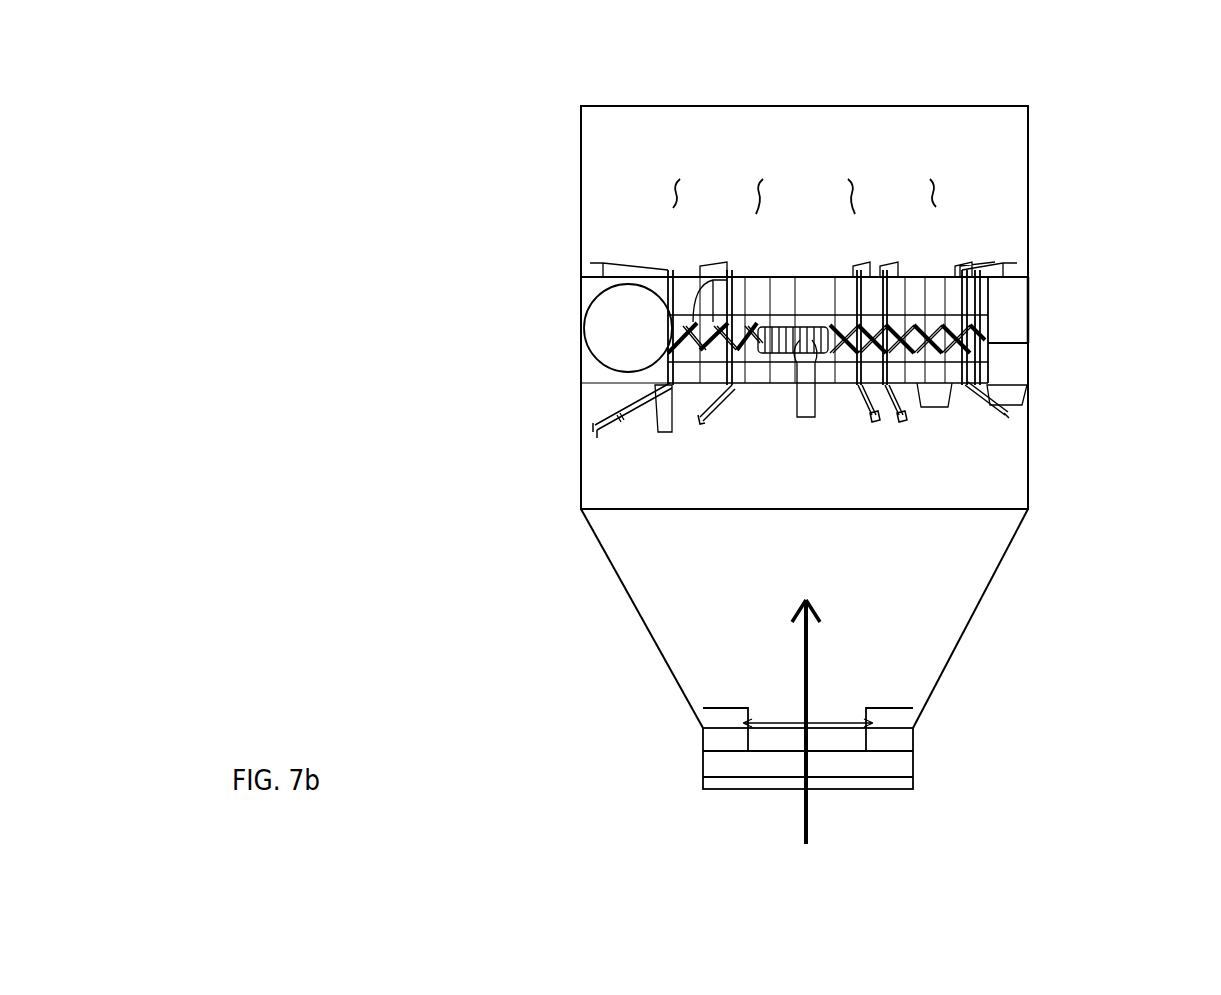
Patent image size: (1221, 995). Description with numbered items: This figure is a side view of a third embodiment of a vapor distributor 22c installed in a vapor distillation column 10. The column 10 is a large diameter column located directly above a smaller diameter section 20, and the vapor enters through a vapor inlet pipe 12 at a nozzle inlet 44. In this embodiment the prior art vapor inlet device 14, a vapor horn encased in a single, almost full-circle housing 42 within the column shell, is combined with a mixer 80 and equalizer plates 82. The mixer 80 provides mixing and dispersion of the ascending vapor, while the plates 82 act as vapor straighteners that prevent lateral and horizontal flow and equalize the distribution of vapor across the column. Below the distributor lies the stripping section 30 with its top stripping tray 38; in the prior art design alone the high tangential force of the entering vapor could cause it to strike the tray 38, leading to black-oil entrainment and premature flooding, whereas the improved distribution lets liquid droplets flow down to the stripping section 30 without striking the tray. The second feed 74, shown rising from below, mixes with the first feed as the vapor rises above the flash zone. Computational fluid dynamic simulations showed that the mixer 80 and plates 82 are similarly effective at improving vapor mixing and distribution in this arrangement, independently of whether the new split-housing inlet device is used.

The vapor distillation column 10 is at (588, 154).
The vapor distributor 22c is at (500, 262).
The equalizer plates 82 is at (758, 185).
The vapor inlet pipe 12 is at (682, 298).
The nozzle inlet 44 is at (670, 378).
The mixing/dispersion device 80 is at (893, 352).
The housing 42 is at (1007, 302).
The vapor inlet device 14 is at (1042, 330).
The stripping section 30 is at (705, 767).
The smaller diameter section 20 is at (697, 775).
The stripping tray 38 is at (913, 752).
The second feed 74 is at (806, 844).